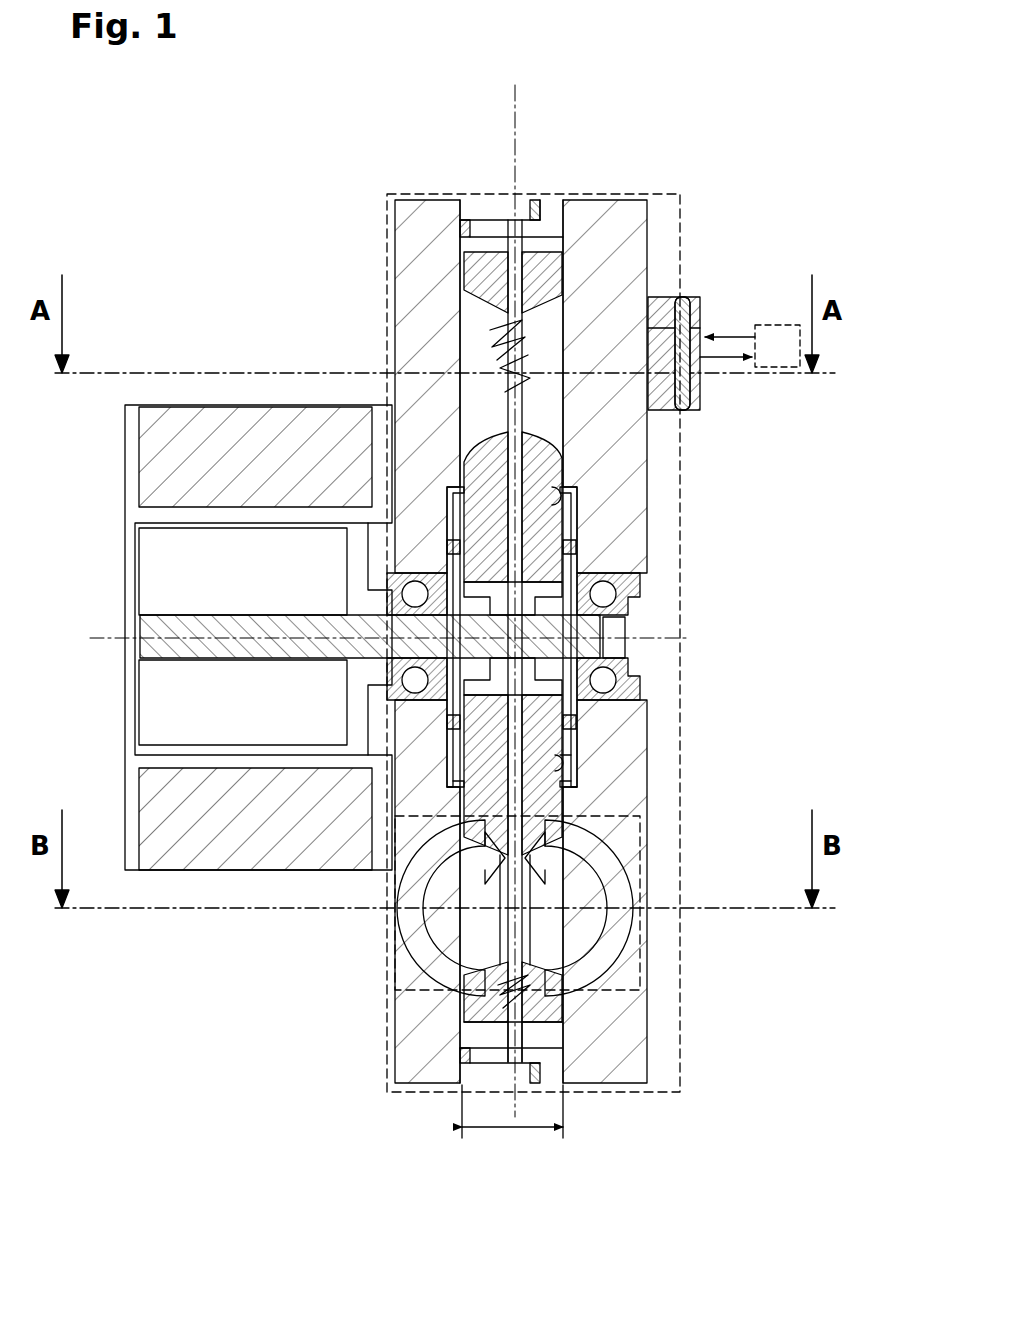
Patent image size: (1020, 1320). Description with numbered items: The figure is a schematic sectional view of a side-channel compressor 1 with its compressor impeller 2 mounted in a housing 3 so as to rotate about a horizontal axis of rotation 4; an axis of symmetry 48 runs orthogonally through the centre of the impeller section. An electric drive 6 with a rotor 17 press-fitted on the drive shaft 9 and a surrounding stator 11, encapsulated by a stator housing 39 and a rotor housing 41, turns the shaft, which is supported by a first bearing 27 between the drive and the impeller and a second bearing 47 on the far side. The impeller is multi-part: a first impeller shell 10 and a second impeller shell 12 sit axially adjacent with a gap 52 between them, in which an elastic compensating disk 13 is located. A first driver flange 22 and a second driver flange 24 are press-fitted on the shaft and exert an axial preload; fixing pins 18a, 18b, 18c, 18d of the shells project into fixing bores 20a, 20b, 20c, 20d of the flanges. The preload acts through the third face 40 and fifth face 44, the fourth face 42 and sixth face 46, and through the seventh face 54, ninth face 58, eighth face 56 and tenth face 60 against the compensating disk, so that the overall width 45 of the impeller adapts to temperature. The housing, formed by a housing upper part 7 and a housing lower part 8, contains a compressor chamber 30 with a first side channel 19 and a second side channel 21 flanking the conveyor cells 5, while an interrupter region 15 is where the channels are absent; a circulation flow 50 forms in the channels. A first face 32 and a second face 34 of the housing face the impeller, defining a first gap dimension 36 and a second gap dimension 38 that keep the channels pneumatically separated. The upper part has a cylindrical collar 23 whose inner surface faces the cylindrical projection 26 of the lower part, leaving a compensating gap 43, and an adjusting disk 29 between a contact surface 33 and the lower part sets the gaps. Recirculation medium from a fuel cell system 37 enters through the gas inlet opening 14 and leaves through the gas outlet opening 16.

The side-channel compressor 1 is at (146, 210).
The compressor impeller 2 is at (555, 472).
The housing 3 is at (430, 195).
The axis of rotation 4 is at (110, 630).
The conveyor cells 5 is at (562, 928).
The drive 6 is at (100, 540).
The housing upper part 7 is at (405, 212).
The housing lower part 8 is at (640, 440).
The drive shaft 9 is at (615, 640).
The first impeller shell 10 is at (478, 275).
The stator 11 is at (145, 785).
The second impeller shell 12 is at (545, 275).
The compensating disk 13 is at (600, 848).
The gas inlet opening 14 is at (695, 300).
The interrupter region 15 is at (430, 362).
The gas outlet opening 16 is at (692, 400).
The rotor 17 is at (150, 543).
The fixing pin 18a is at (455, 552).
The fixing pin 18b is at (455, 722).
The fixing pin 18c is at (577, 542).
The fixing pin 18d is at (580, 742).
The first side channel 19 is at (420, 930).
The fixing bore 20a is at (455, 525).
The fixing bore 20b is at (455, 737).
The fixing bore 20c is at (577, 527).
The fixing bore 20d is at (580, 762).
The second side channel 21 is at (560, 1030).
The first driver flange 22 is at (410, 682).
The cylindrical collar 23 is at (478, 230).
The second driver flange 24 is at (568, 703).
The cylindrical projection 26 is at (478, 1092).
The first bearing 27 is at (408, 598).
The adjusting disk 29 is at (558, 203).
The compressor chamber 30 is at (654, 990).
The first face 32 is at (505, 1000).
The contact surface 33 is at (538, 210).
The second face 34 is at (560, 808).
The first functionally relevant gap dimension 36 is at (440, 1085).
The fuel cell system 37 is at (750, 346).
The second functionally relevant gap dimension 38 is at (590, 1090).
The stator housing 39 is at (195, 405).
The third face 40 is at (440, 885).
The rotor housing 41 is at (130, 722).
The fourth face 42 is at (568, 775).
The compensating gap 43 is at (468, 222).
The fifth face 44 is at (462, 495).
The overall width 45 is at (515, 1140).
The sixth face 46 is at (562, 497).
The second bearing 47 is at (628, 592).
The axis of symmetry 48 is at (522, 92).
The circulation flow 50 is at (445, 950).
The gap 52 is at (590, 1063).
The seventh face 54 is at (684, 300).
The eighth face 56 is at (515, 368).
The ninth face 58 is at (505, 1012).
The tenth face 60 is at (598, 1085).